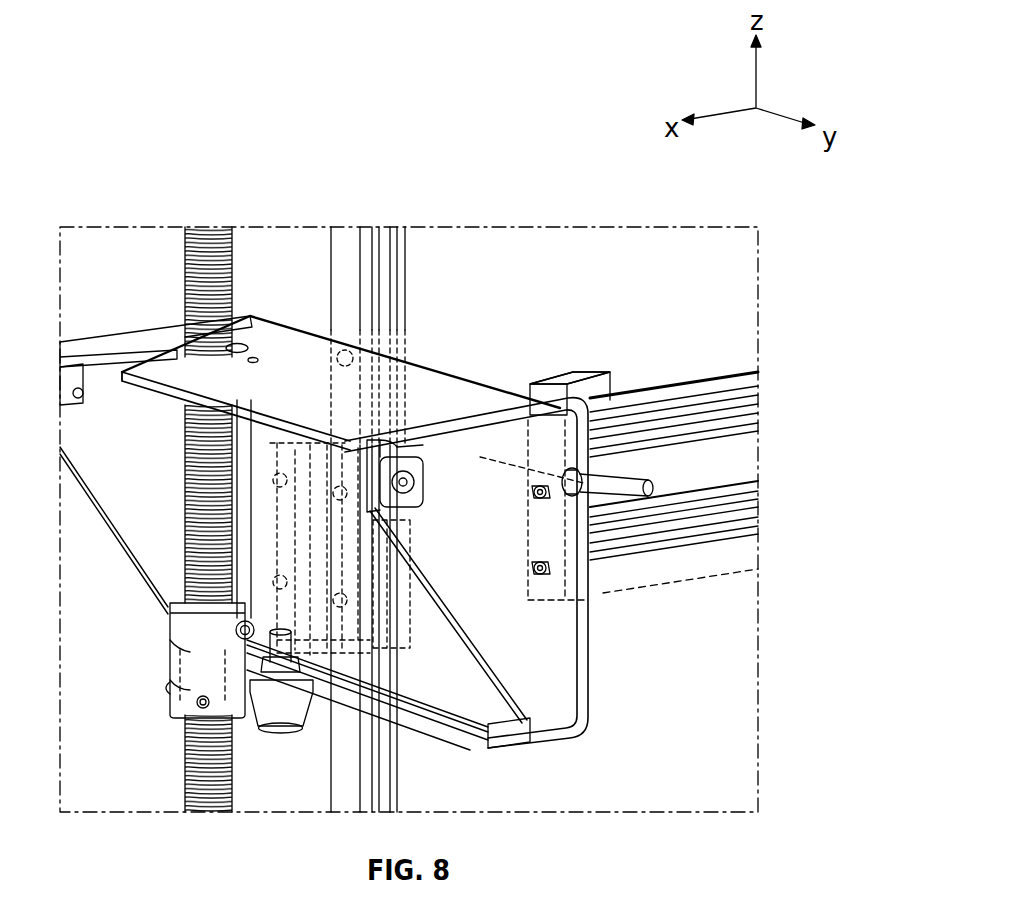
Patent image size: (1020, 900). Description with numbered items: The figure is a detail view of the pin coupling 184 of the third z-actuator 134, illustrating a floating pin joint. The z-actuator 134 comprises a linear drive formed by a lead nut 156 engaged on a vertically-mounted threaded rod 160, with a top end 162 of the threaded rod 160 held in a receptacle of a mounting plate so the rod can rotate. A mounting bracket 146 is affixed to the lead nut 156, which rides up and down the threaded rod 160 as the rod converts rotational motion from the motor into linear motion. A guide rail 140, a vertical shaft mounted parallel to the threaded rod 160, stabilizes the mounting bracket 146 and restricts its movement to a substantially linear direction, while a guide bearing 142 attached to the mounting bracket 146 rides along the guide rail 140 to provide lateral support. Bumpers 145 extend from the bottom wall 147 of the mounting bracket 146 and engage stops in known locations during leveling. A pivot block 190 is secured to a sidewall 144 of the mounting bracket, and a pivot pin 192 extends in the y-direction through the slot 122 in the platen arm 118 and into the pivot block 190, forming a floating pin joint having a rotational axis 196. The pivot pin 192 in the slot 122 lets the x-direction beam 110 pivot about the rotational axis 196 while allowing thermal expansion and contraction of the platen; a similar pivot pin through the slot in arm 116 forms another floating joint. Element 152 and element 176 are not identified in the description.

The x-direction beam 110 is at (677, 567).
The platen arm 116 is at (748, 387).
The platen arm 118 is at (685, 378).
The slot 122 is at (653, 493).
The third z-actuator 134 is at (118, 170).
The guide rail 140 is at (390, 243).
The guide bearing 142 is at (347, 552).
The sidewall 144 is at (410, 350).
The bumper 145 is at (250, 710).
The mounting bracket 146 is at (459, 664).
The bottom wall 147 is at (447, 727).
The frame bracket 152 is at (560, 627).
The lead nut 156 is at (178, 662).
The threaded rod 160 is at (203, 236).
The top end 162 is at (182, 343).
The fastener head 176 is at (587, 476).
The pin coupling 184 is at (583, 378).
The pivot block 190 is at (553, 380).
The pivot pin 192 is at (612, 522).
The rotational axis 196 is at (704, 519).